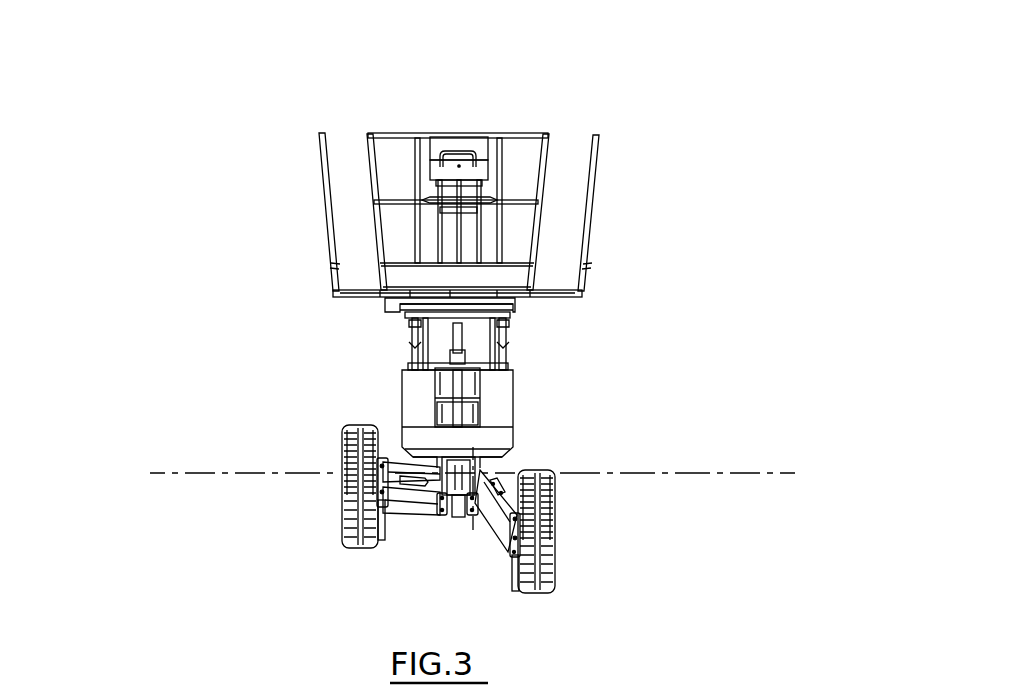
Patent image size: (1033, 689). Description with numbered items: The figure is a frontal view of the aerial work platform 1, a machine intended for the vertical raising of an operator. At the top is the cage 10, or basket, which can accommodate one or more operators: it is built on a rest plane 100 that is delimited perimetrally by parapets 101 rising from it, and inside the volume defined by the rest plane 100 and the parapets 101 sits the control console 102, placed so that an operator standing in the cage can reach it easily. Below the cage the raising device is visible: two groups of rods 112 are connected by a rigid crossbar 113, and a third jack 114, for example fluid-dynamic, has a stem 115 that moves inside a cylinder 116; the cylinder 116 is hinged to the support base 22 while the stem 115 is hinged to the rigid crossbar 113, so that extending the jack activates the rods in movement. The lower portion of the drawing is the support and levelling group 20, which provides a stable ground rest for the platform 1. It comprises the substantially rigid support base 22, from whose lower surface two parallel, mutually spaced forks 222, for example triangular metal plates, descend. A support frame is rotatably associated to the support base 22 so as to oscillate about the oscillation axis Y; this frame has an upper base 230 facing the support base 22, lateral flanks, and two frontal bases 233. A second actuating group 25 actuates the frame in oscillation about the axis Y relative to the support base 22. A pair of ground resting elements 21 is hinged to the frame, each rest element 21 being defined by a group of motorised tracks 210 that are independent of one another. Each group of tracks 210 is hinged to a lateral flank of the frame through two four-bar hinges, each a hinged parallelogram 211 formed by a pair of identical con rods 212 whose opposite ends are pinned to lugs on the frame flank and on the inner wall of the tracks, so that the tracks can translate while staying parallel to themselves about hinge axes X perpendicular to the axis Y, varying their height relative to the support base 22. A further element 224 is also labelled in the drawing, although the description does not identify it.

The aerial work platform 1 is at (208, 117).
The cage 10 is at (318, 143).
The rest plane 100 is at (570, 292).
The parapets 101 is at (417, 499).
The control console 102 is at (450, 158).
The groups of rods 112 is at (413, 358).
The rigid crossbar 113 is at (440, 315).
The third jack 114 is at (455, 388).
The stem 115 is at (452, 342).
The cylinder 116 is at (455, 413).
The support and levelling group 20 is at (518, 464).
The ground resting elements 21 is at (383, 487).
The support base 22 is at (413, 440).
The second actuating group 25 is at (457, 487).
The group of motorised tracks 210 is at (343, 514).
The hinged parallelogram 211 is at (555, 578).
The con rods 212 is at (343, 464).
The forks 222 is at (513, 453).
The steering rod 224 is at (345, 444).
The upper base 230 is at (343, 508).
The frontal bases 233 is at (440, 512).